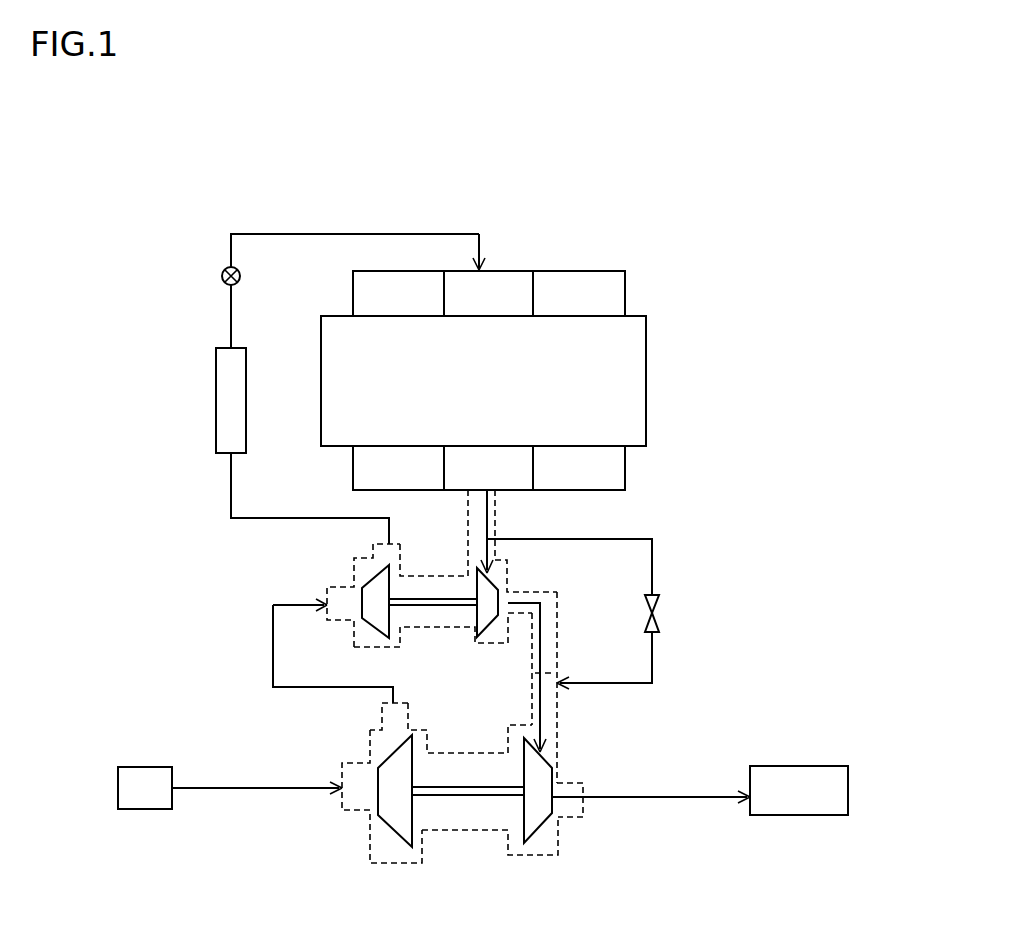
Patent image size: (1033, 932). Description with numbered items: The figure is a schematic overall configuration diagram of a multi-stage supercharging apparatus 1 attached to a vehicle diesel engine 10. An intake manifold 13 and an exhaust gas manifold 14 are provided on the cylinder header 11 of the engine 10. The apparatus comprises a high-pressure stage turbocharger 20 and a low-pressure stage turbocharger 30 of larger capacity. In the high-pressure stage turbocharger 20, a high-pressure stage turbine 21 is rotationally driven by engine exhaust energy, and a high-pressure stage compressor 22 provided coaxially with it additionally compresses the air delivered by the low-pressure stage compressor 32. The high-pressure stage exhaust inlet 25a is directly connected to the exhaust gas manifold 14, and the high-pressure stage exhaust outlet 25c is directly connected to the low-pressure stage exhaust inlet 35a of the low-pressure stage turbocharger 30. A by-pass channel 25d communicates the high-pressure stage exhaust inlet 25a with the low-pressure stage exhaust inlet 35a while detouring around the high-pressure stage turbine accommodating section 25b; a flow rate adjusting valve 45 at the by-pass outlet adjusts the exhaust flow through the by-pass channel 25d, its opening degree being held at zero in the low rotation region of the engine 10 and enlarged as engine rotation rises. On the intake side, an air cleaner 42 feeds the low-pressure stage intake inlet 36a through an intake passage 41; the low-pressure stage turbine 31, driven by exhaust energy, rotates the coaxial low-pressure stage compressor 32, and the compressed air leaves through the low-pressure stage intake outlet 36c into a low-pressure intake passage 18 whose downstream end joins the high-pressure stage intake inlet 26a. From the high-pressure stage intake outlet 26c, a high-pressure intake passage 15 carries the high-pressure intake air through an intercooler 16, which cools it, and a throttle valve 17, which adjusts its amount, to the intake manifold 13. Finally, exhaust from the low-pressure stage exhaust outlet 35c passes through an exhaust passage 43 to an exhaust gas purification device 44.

The multi-stage supercharging apparatus 1 is at (713, 583).
The diesel engine 10 is at (532, 350).
The cylinder header 11 is at (646, 412).
The intake manifold 13 is at (562, 271).
The exhaust gas manifold 14 is at (625, 471).
The high-pressure intake passage 15 is at (290, 518).
The intercooler 16 is at (246, 400).
The throttle valve 17 is at (241, 277).
The low-pressure intake passage 18 is at (273, 648).
The high-pressure stage turbocharger 20 is at (431, 629).
The high-pressure stage turbine 21 is at (485, 632).
The high-pressure stage compressor 22 is at (378, 632).
The high-pressure stage exhaust inlet 25a is at (495, 512).
The high-pressure stage turbine accommodating section 25b is at (510, 575).
The high-pressure stage exhaust outlet 25c is at (555, 606).
The by-pass channel 25d is at (653, 660).
The high-pressure stage intake inlet 26a is at (328, 586).
The high-pressure stage intake outlet 26c is at (418, 545).
The low-pressure stage turbocharger 30 is at (467, 827).
The low-pressure stage turbine 31 is at (536, 838).
The low-pressure stage compressor 32 is at (396, 840).
The low-pressure stage exhaust inlet 35a is at (560, 707).
The low-pressure stage exhaust outlet 35c is at (568, 822).
The low-pressure stage intake inlet 36a is at (354, 820).
The low-pressure stage intake outlet 36c is at (376, 710).
The intake passage 41 is at (240, 788).
The air cleaner 42 is at (148, 809).
The exhaust passage 43 is at (683, 797).
The exhaust gas purification device 44 is at (796, 815).
The flow rate adjusting valve 45 is at (655, 612).